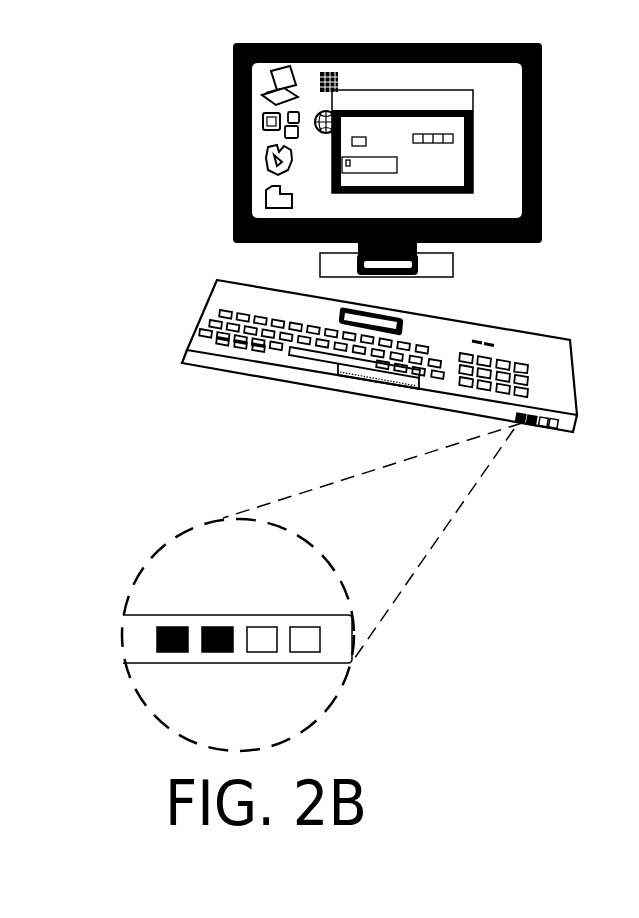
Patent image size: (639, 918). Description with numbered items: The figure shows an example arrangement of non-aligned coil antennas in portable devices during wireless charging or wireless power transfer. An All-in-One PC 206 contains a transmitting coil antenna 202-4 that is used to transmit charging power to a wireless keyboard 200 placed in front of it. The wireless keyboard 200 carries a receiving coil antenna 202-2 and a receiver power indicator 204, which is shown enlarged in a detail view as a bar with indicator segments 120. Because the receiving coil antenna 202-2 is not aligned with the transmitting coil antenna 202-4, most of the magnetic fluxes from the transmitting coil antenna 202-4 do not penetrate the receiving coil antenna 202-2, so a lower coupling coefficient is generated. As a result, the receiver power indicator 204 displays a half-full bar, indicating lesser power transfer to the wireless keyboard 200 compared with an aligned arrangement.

The All-in-One (AIO) PC 206 is at (233, 118).
The coil antenna 202-4 is at (417, 268).
The wireless keyboard 200 is at (192, 336).
The coil antenna 202-2 is at (405, 315).
The receiver power indicator 204 is at (140, 575).
The indicator bar / light indicators 120 is at (133, 637).